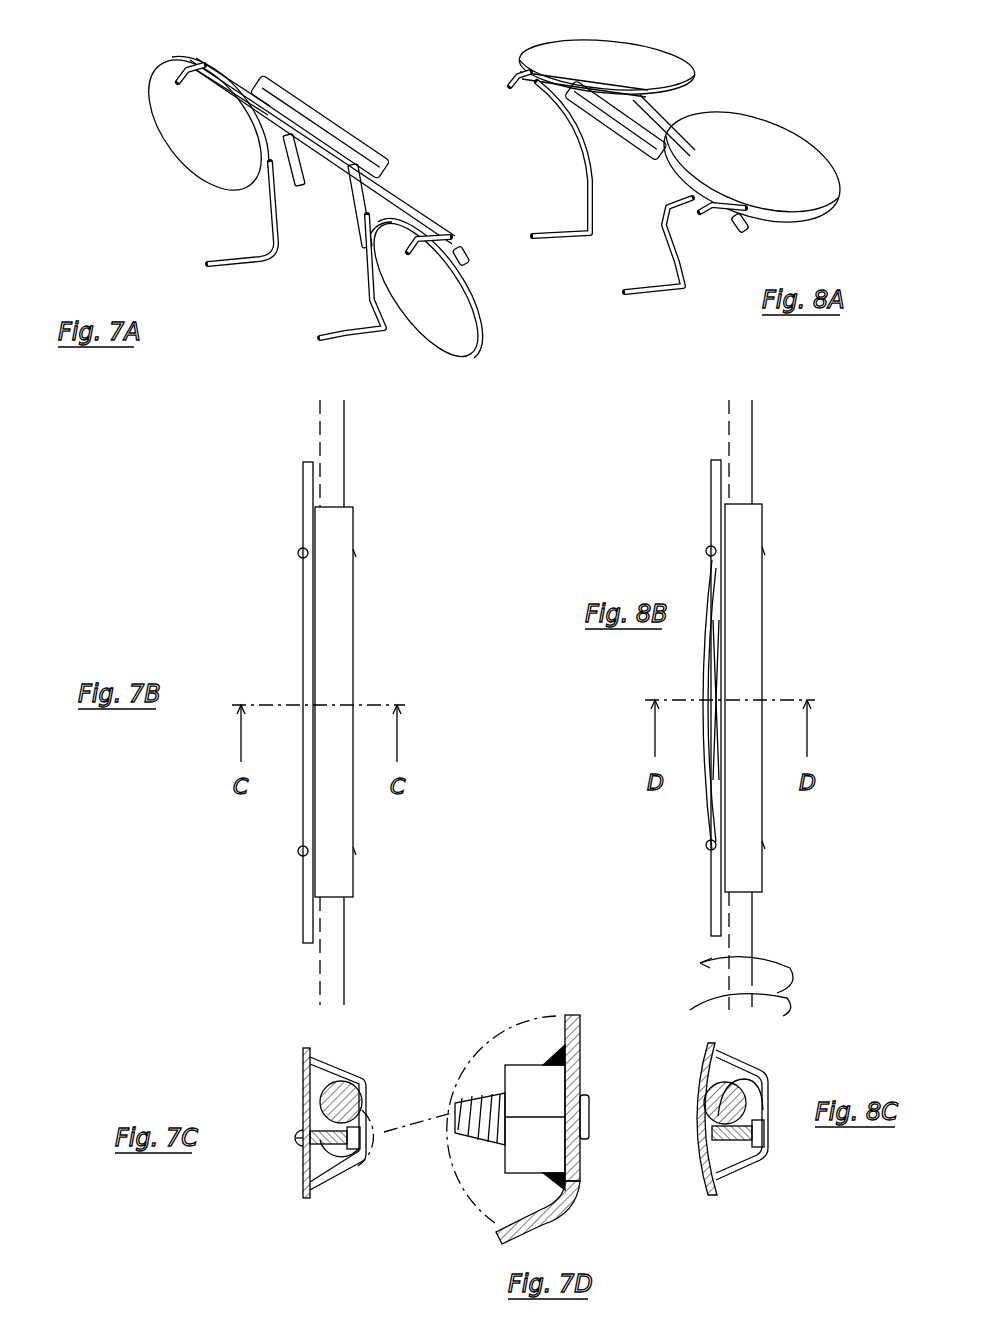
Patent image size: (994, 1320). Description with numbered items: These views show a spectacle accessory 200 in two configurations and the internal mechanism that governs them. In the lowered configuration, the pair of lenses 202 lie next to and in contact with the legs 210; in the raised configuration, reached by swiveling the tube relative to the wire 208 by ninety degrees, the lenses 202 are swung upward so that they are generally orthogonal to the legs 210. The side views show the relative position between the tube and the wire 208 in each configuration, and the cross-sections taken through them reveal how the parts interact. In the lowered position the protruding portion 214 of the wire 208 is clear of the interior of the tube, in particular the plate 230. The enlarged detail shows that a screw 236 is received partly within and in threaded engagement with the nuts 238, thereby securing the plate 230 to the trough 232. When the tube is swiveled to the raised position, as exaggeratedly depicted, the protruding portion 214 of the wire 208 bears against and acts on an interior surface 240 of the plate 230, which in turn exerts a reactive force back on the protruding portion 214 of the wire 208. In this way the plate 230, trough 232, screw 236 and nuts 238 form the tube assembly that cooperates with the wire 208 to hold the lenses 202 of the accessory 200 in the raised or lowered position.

In FIG. 7A, the spectacle accessory 200 is at (160, 196).
In FIG. 8A, the spectacle accessory 200 is at (765, 90).
In FIG. 7A, the lenses 202 is at (172, 96).
In FIG. 8A, the lenses 202 is at (588, 58).
In FIG. 7B, the wire 208 is at (332, 474).
In FIG. 8B, the wire 208 is at (745, 472).
In FIG. 7C, the wire 208 is at (350, 1083).
In FIG. 8C, the wire 208 is at (755, 1100).
In FIG. 7A, the legs 210 is at (245, 266).
In FIG. 8A, the legs 210 is at (586, 183).
In FIG. 8B, the protruding portion 214 is at (718, 696).
In FIG. 8C, the protruding portion 214 is at (703, 1110).
In FIG. 7B, the plate 230 is at (303, 618).
In FIG. 8B, the plate 230 is at (712, 522).
In FIG. 7C, the plate 230 is at (303, 1075).
In FIG. 7B, the trough 232 is at (345, 655).
In FIG. 8B, the trough 232 is at (762, 596).
In FIG. 7C, the trough 232 is at (330, 1178).
In FIG. 7D, the trough 232 is at (578, 1033).
In FIG. 8C, the trough 232 is at (742, 1115).
In FIG. 7D, the screw 236 is at (470, 1092).
In FIG. 7D, the nuts 238 is at (530, 1087).
In FIG. 8C, the interior surface 240 is at (728, 1057).